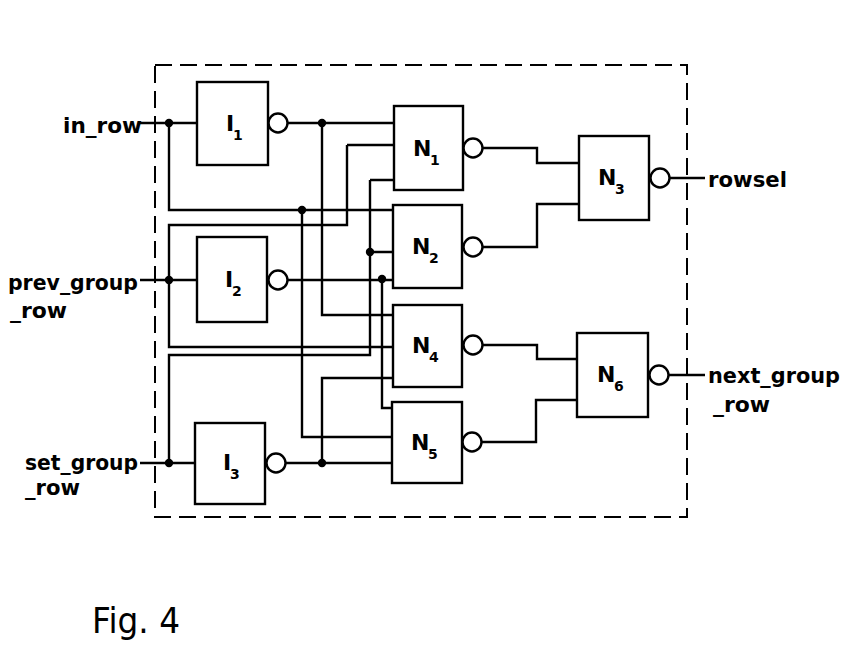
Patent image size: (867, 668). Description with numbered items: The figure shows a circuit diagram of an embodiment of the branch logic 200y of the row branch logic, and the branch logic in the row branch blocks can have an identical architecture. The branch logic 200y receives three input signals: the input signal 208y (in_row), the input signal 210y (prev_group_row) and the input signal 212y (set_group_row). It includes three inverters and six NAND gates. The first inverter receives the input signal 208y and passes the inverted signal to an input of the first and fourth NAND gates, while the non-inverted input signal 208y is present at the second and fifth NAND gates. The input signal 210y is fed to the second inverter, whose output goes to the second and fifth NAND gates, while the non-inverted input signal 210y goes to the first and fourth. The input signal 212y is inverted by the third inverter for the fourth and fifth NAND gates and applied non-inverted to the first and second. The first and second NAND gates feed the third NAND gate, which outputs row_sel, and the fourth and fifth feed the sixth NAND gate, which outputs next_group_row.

The branch logic 200y is at (642, 39).
The input signal (in_row) 208y is at (155, 123).
The input signal (prev_group_row) 210y is at (155, 280).
The input signal (set_group_row) 212y is at (155, 463).